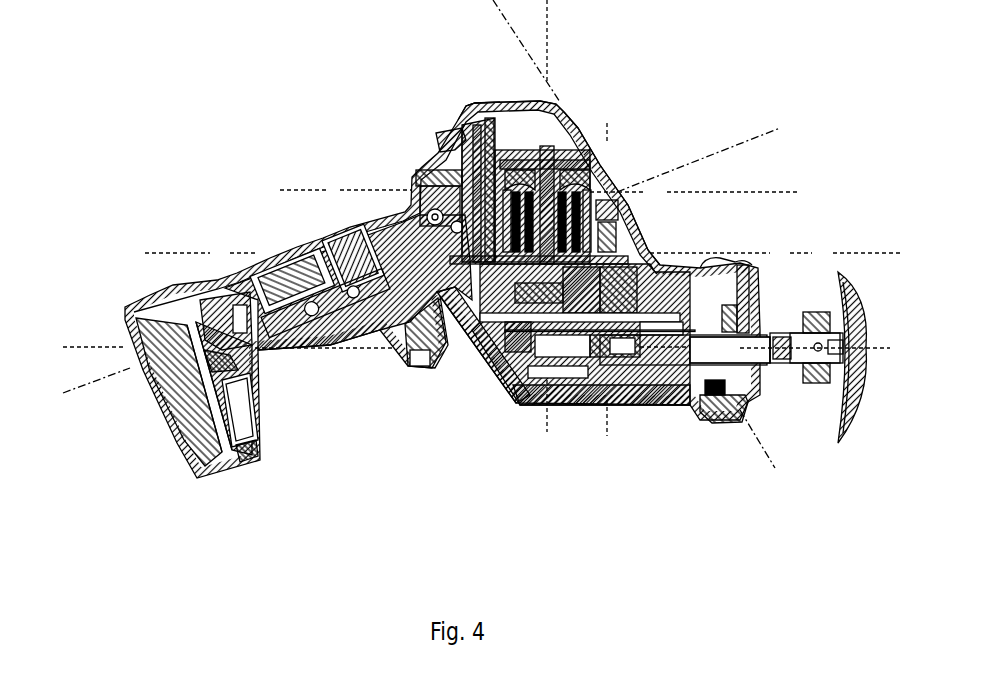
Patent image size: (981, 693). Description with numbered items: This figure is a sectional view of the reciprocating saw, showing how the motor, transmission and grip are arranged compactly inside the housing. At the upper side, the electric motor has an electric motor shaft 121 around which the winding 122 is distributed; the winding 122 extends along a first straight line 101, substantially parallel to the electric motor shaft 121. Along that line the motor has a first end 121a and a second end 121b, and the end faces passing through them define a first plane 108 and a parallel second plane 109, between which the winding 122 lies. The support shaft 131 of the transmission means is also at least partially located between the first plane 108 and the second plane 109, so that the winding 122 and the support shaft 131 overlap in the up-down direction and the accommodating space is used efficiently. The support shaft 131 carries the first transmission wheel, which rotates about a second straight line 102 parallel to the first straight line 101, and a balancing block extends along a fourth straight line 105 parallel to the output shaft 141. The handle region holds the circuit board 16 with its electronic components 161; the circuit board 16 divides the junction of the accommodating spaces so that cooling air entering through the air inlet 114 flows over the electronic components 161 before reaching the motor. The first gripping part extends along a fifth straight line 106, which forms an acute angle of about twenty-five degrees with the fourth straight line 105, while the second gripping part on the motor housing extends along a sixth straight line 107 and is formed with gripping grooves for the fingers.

The circuit board 16 is at (457, 146).
The first straight line 101 is at (540, 407).
The second straight line 102 is at (607, 152).
The fourth straight line 105 is at (113, 347).
The fifth straight line 106 is at (757, 137).
The sixth straight line 107 is at (557, 97).
The first plane 108 is at (330, 188).
The second plane 109 is at (178, 250).
The air inlet 114 is at (470, 103).
The electric motor shaft 121 is at (566, 128).
The first end 121a is at (517, 90).
The second end 121b is at (467, 337).
The winding 122 is at (622, 200).
The support shaft 131 is at (740, 263).
The output shaft 141 is at (707, 413).
The electronic components 161 is at (411, 190).